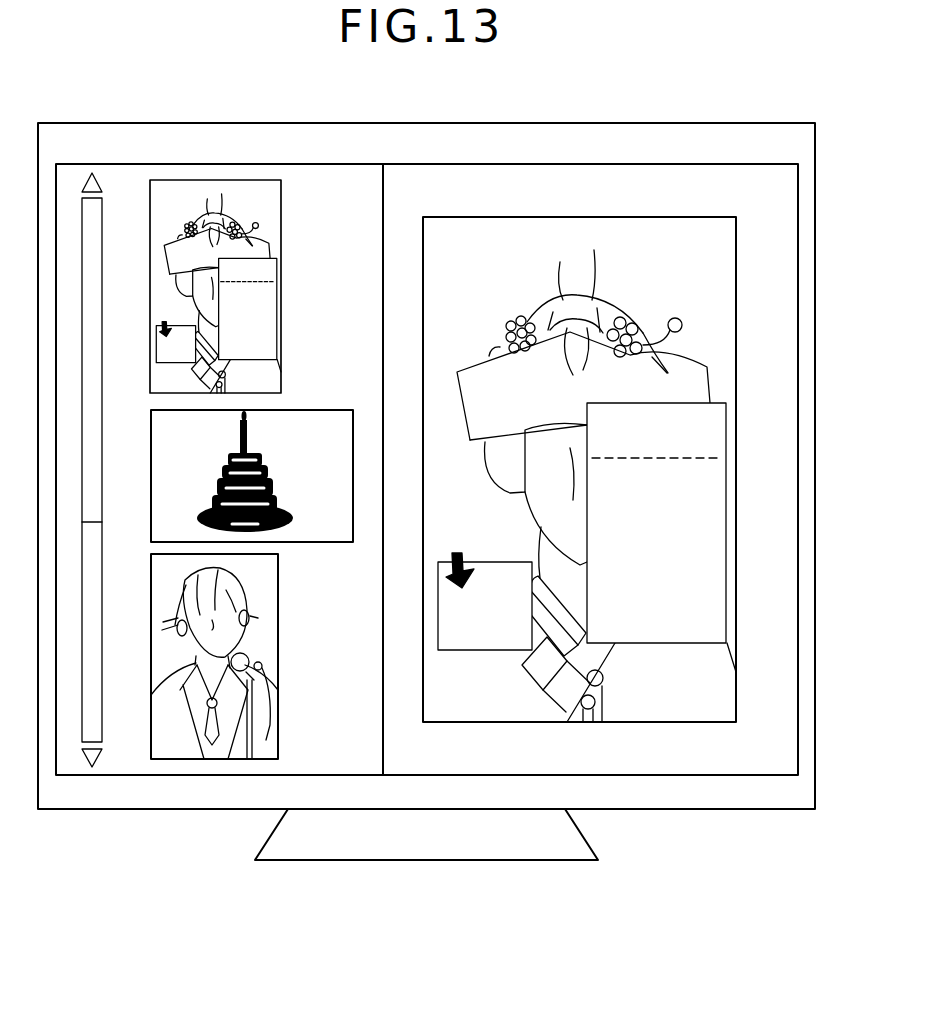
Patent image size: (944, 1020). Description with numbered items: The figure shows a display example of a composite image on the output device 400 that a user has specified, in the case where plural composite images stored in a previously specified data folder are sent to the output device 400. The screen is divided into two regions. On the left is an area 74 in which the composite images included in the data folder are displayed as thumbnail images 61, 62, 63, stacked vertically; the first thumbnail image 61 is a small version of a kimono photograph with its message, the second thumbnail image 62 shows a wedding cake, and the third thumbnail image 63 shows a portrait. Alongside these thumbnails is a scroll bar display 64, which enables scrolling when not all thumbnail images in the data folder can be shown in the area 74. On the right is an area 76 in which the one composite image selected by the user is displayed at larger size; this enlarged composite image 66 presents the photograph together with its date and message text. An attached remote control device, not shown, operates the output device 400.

The output device 400 is at (744, 118).
The area 74 is at (330, 185).
The area 76 is at (635, 183).
The scroll bar display 64 is at (80, 258).
The thumbnail image 61 is at (217, 180).
The thumbnail image 62 is at (148, 477).
The thumbnail image 63 is at (216, 760).
The enlarged content image 66 is at (683, 725).